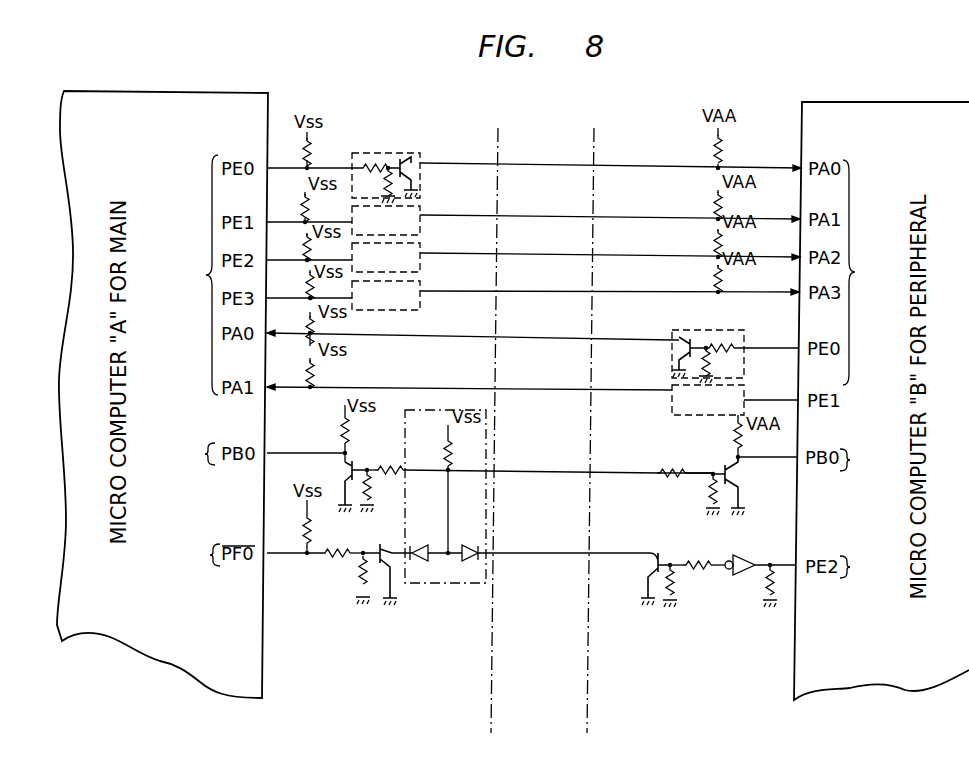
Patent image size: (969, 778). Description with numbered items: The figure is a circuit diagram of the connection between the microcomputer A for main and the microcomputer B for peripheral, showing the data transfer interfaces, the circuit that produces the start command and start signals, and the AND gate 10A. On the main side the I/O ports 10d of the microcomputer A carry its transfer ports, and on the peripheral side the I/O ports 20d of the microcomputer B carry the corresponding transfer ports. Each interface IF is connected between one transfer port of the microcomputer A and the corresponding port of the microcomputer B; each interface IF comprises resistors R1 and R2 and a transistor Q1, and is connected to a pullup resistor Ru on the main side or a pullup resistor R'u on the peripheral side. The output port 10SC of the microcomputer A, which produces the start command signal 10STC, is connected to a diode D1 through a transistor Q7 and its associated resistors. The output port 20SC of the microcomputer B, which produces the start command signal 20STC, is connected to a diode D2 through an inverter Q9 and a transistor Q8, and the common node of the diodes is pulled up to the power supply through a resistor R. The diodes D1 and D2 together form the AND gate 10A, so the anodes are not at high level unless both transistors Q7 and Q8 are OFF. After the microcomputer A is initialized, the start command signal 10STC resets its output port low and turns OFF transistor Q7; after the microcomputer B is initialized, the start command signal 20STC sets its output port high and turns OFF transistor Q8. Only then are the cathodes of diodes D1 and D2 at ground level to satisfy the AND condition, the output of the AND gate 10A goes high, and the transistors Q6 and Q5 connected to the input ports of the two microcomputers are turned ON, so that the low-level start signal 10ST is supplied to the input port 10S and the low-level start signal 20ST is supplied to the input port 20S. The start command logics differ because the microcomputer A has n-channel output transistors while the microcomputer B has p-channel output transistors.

The I/O ports 10d is at (194, 275).
The I/O ports 20d is at (868, 272).
The input port 10S is at (188, 454).
The input port 20S is at (864, 460).
The output port 10SC is at (190, 555).
The output port 20SC is at (870, 567).
The start signal 10ST is at (284, 453).
The start signal 20ST is at (761, 437).
The start command signal 10STC is at (320, 557).
The start command signal 20STC is at (769, 560).
The AND gate 10A is at (443, 590).
The interface IF is at (754, 386).
The transistor Q1 is at (675, 345).
The transistor Q5 is at (713, 486).
The transistor Q6 is at (360, 485).
The transistor Q7 is at (380, 562).
The transistor Q8 is at (658, 568).
The inverter Q9 is at (733, 552).
The resistor R is at (455, 490).
The resistor R1 is at (722, 342).
The resistor R2 is at (547, 274).
The pullup resistor Ru is at (296, 216).
The pullup resistor R'u is at (501, 258).
The diode D1 is at (426, 542).
The diode D2 is at (549, 542).